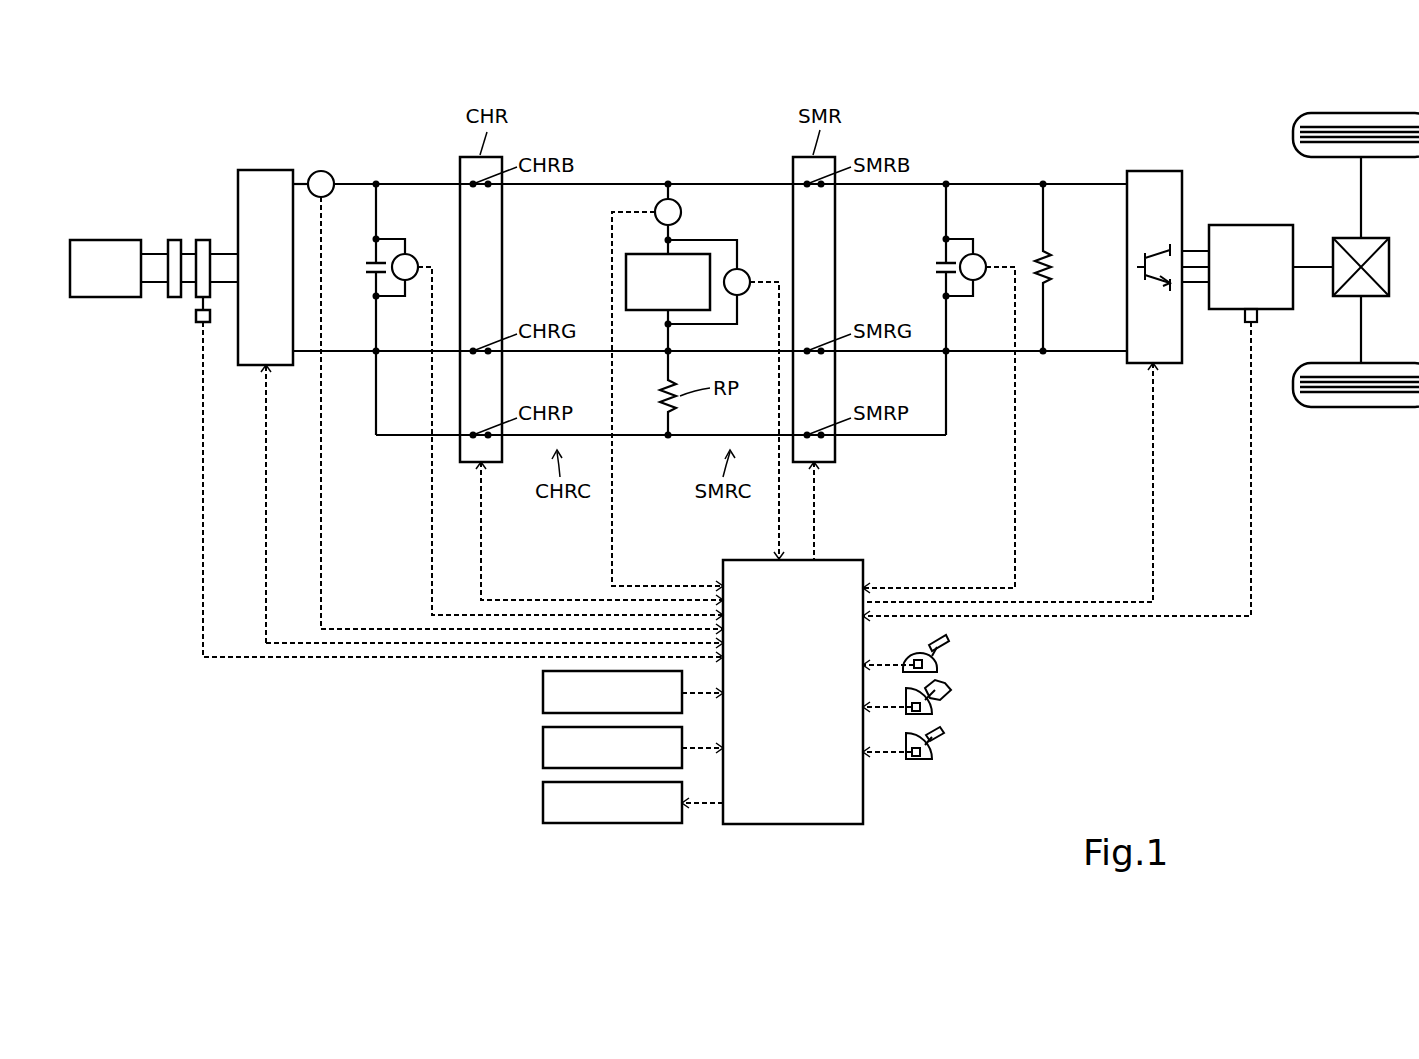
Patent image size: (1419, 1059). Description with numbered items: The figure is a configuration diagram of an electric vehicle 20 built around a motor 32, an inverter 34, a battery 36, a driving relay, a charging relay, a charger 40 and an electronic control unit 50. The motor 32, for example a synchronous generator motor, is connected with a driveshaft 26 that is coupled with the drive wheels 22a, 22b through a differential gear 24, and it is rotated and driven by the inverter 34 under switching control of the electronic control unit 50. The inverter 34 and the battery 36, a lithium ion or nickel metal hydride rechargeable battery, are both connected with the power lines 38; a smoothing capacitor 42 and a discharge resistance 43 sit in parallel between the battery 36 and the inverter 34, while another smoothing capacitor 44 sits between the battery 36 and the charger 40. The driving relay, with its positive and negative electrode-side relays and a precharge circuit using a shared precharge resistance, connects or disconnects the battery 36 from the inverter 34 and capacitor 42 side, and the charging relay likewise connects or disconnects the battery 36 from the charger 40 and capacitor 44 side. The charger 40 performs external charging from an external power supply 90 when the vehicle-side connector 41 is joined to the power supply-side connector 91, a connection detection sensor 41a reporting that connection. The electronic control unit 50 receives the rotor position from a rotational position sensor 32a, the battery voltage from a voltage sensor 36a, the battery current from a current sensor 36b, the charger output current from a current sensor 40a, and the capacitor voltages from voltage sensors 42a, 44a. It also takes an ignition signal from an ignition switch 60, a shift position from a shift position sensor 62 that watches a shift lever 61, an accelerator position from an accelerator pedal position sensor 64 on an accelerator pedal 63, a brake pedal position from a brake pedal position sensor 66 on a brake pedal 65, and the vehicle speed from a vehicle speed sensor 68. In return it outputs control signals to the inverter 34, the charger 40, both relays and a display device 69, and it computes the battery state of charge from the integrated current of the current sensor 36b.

The electric vehicle 20 is at (1015, 100).
The drive wheel 22a is at (1362, 112).
The drive wheel 22b is at (1362, 407).
The differential gear 24 is at (1373, 237).
The driveshaft 26 is at (1308, 263).
The motor 32 is at (1250, 223).
The rotational position sensor 32a is at (1243, 323).
The inverter 34 is at (1154, 170).
The battery 36 is at (703, 252).
The voltage sensor 36a is at (743, 265).
The current sensor 36b is at (660, 197).
The power lines 38 is at (1098, 188).
The charger 40 is at (265, 168).
The current sensor 40a is at (322, 167).
The vehicle-side connector 41 is at (202, 239).
The connection detection sensor 41a is at (197, 325).
The capacitor 42 is at (940, 262).
The voltage sensor 42a is at (980, 257).
The discharge resistance 43 is at (1053, 257).
The capacitor 44 is at (370, 262).
The voltage sensor 44a is at (407, 257).
The electronic control unit 50 is at (853, 559).
The ignition switch 60 is at (543, 693).
The shift lever 61 is at (945, 653).
The shift position sensor 62 is at (938, 669).
The accelerator pedal 63 is at (950, 697).
The accelerator pedal position sensor 64 is at (930, 710).
The brake pedal 65 is at (940, 745).
The brake pedal position sensor 66 is at (930, 758).
The vehicle speed sensor 68 is at (543, 748).
The display device 69 is at (543, 803).
The external power supply 90 is at (112, 239).
The power supply-side connector 91 is at (175, 239).